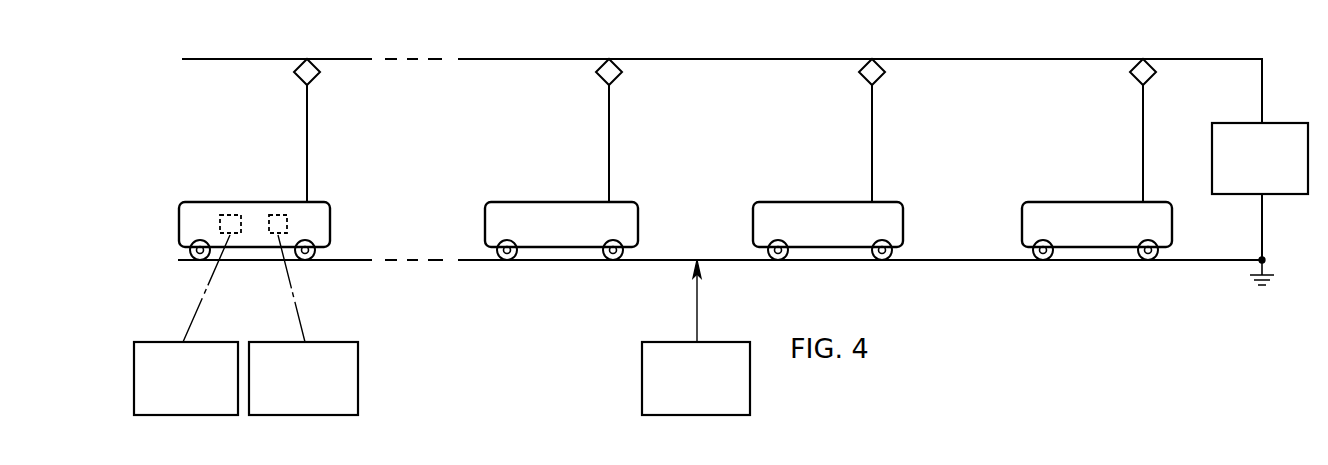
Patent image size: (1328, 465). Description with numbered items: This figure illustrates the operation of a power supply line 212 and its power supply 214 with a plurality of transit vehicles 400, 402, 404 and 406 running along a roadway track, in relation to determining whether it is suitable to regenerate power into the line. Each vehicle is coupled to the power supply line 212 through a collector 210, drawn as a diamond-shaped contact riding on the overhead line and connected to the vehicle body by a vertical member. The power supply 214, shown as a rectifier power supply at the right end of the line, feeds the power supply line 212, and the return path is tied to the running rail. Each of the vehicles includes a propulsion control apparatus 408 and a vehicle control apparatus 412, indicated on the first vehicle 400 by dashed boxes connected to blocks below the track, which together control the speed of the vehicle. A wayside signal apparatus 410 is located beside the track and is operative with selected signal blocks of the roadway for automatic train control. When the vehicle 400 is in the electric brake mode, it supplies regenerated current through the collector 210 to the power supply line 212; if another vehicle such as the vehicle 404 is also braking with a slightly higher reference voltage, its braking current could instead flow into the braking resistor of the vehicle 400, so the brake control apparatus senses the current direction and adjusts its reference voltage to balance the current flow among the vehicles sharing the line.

The collector 210 is at (313, 87).
The power supply line 212 is at (1183, 60).
The power supply 214 is at (1212, 128).
The transit vehicle 400 is at (322, 202).
The transit vehicle 402 is at (628, 202).
The transit vehicle 404 is at (895, 202).
The transit vehicle 406 is at (1158, 202).
The propulsion control apparatus 408 is at (170, 342).
The wayside signal apparatus 410 is at (665, 342).
The vehicle control apparatus 412 is at (337, 342).